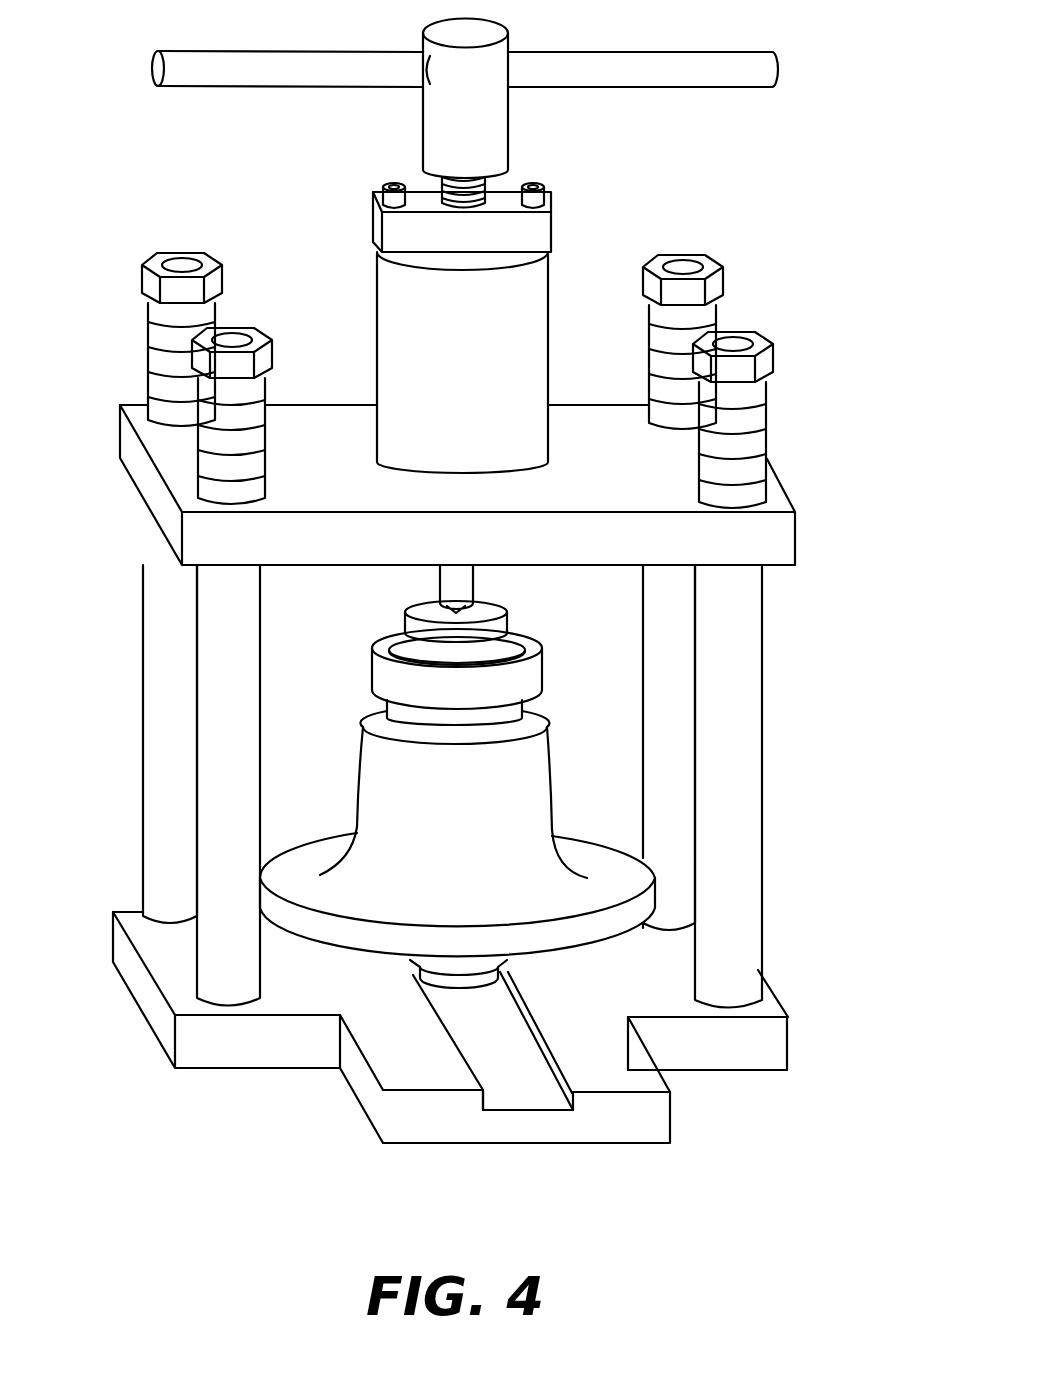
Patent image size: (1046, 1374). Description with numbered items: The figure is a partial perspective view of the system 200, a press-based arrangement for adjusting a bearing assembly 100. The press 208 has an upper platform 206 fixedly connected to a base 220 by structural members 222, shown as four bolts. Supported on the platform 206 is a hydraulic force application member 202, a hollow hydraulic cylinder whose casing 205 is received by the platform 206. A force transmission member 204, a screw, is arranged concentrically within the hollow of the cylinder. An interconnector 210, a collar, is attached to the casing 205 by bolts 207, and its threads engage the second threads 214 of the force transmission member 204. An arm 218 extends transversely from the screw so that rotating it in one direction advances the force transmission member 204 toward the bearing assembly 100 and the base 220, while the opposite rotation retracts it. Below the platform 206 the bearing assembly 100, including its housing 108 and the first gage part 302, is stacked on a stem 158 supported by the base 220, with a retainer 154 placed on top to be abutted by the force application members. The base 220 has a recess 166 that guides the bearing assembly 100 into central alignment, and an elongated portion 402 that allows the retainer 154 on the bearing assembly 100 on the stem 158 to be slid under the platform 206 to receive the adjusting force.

The bearing assembly 100 is at (357, 683).
The housing 108 is at (535, 803).
The retainer 154 is at (492, 608).
The stem 158 is at (470, 985).
The recess 166 is at (518, 1052).
The system 200 is at (100, 1048).
The hydraulic force application member 202 is at (358, 346).
The force transmission member 204 is at (462, 575).
The casing 205 is at (546, 277).
The platform 206 is at (598, 423).
The bolt 207 is at (543, 197).
The press 208 is at (795, 788).
The interconnector 210 is at (428, 193).
The second threads 214 is at (492, 190).
The arm 218 is at (720, 77).
The base 220 is at (292, 1052).
The structural member 222 is at (750, 642).
The first gage part 302 is at (530, 680).
The portion 402 is at (520, 1092).